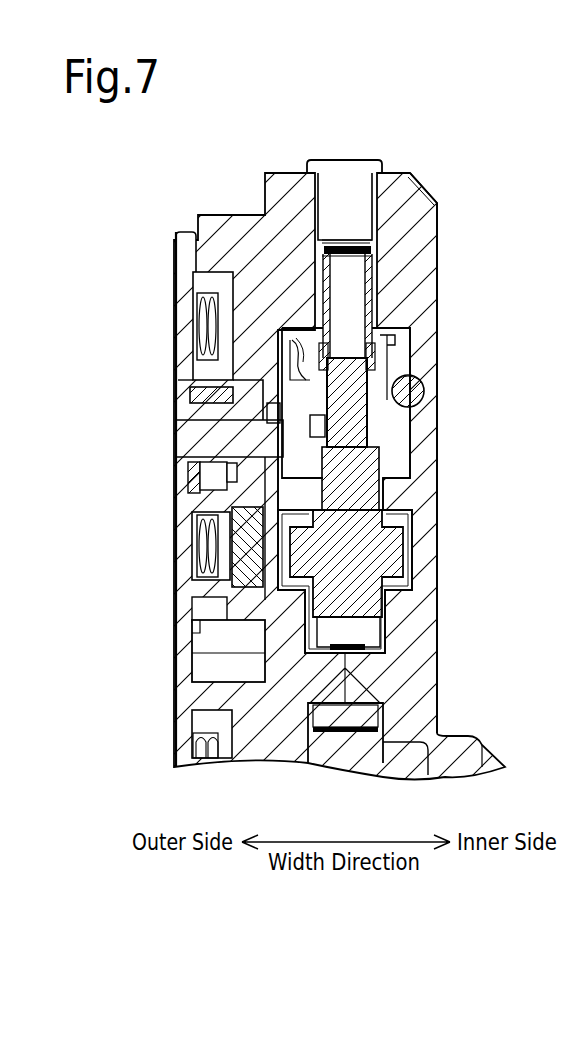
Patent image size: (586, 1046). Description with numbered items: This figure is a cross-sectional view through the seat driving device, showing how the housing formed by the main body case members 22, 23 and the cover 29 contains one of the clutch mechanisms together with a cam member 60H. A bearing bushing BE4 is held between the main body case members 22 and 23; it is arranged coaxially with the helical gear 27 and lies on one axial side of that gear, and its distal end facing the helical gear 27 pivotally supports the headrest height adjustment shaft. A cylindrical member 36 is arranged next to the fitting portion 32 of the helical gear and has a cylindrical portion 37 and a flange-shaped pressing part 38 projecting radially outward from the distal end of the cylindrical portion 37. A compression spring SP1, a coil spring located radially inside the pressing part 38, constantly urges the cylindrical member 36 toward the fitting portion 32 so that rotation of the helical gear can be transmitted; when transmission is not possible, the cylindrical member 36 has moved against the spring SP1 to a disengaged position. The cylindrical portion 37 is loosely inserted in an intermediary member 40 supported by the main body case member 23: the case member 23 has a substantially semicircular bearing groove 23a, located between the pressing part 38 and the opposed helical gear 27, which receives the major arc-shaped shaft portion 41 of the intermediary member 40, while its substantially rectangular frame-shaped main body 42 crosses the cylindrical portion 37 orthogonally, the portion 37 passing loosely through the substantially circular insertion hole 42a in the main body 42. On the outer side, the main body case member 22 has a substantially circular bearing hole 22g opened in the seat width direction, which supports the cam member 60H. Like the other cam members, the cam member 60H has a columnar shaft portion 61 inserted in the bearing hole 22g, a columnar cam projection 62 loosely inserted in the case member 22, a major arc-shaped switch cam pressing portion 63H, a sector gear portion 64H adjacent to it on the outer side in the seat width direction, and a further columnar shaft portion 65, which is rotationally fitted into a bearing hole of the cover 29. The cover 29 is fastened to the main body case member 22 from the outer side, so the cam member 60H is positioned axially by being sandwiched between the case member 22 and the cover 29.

The main body case member 22 is at (298, 177).
The main body case member 23 is at (400, 178).
The bearing groove 23a is at (426, 398).
The intermediary member 40 is at (273, 372).
The cover 29 is at (178, 239).
The cam projection 62 is at (220, 322).
The switch cam pressing portion 63H is at (255, 372).
The sector gear portion 64H is at (213, 392).
The cam member 60H is at (212, 405).
The shaft portion 65 is at (178, 436).
The cylindrical member 36 is at (235, 466).
The bearing hole 22g is at (225, 466).
The fitting portion 32 is at (235, 486).
The bearing bushing BE4 is at (372, 250).
The pressing part 38 is at (405, 345).
The compression spring SP1 is at (412, 342).
The main body 42 is at (414, 374).
The shaft portion 41 is at (414, 405).
The insertion hole 42a is at (412, 433).
The cylindrical portion 37 is at (412, 468).
The shaft portion 61 is at (365, 470).
The helical gear 27 is at (405, 567).